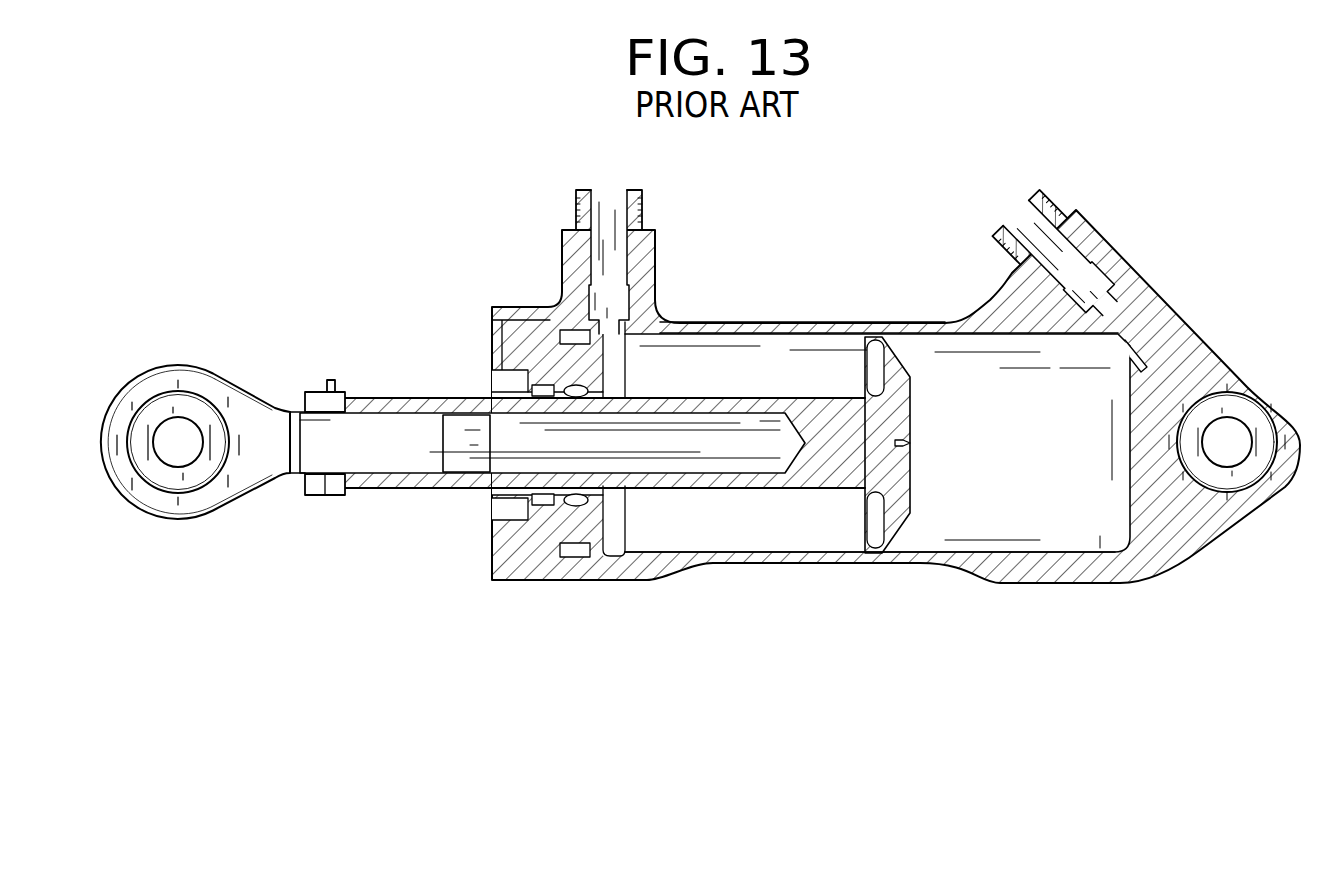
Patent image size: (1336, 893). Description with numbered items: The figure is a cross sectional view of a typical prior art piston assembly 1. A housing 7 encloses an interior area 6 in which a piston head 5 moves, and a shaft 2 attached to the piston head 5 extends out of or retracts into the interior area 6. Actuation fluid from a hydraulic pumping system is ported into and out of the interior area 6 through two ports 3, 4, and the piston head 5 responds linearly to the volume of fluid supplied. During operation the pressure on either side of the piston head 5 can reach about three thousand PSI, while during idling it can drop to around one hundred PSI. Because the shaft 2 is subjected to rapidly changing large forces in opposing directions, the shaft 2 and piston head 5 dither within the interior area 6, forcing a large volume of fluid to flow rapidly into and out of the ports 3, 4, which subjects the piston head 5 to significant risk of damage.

The piston assembly 1 is at (374, 309).
The shaft 2 is at (377, 400).
The port 3 is at (623, 307).
The port 4 is at (1137, 323).
The piston head 5 is at (878, 338).
The interior area 6 is at (820, 344).
The housing 7 is at (962, 276).